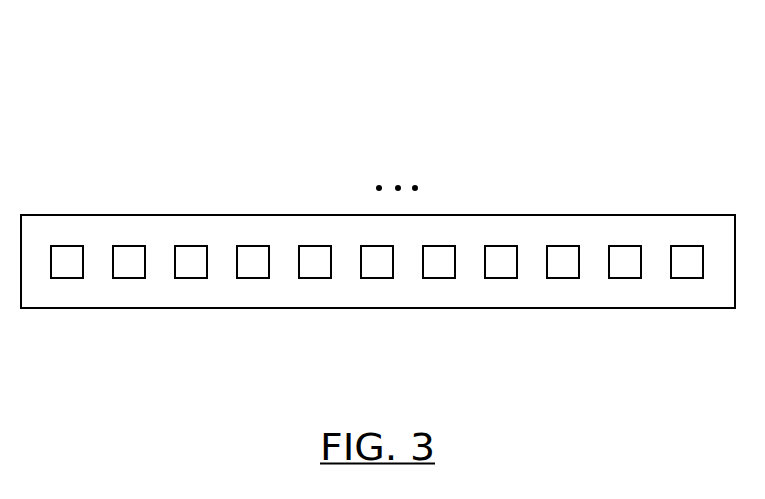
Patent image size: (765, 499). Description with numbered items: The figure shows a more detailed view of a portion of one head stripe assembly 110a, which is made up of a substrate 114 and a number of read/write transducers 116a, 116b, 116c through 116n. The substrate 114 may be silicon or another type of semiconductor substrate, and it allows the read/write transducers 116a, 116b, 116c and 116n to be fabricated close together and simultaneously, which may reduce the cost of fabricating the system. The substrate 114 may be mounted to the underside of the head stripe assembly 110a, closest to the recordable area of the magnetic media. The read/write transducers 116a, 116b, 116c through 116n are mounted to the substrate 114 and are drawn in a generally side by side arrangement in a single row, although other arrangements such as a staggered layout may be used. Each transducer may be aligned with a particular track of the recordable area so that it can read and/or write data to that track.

The head stripe assembly 110a is at (256, 47).
The substrate 114 is at (36, 302).
The read/write transducer 116a is at (59, 246).
The read/write transducer 116b is at (120, 246).
The read/write transducer 116c is at (182, 246).
The read/write transducer 116n is at (682, 246).